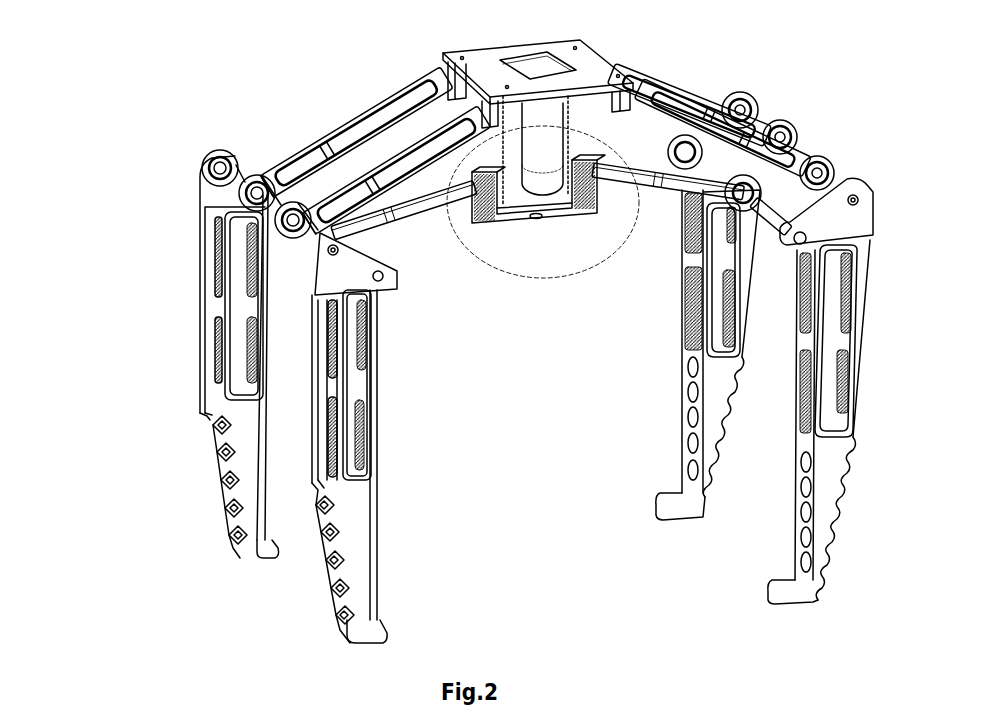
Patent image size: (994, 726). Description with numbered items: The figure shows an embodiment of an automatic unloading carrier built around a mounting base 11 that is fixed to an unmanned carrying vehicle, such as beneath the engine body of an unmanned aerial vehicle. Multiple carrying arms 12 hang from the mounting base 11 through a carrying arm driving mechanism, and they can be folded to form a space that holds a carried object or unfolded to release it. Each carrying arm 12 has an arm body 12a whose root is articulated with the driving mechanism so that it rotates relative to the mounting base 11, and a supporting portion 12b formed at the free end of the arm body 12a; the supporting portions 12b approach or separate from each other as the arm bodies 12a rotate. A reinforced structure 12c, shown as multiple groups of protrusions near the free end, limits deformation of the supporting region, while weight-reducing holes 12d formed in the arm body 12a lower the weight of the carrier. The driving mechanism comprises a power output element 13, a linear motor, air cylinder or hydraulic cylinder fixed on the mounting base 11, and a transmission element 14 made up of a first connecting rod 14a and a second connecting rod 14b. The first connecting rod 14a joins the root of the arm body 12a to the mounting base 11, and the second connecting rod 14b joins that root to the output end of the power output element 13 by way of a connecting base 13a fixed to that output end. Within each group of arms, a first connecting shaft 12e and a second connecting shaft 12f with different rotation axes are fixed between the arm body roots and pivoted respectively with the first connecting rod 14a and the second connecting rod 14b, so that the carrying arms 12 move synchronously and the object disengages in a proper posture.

The mounting base 11 is at (585, 66).
The carrying arm 12 is at (231, 388).
The arm body 12a is at (317, 430).
The supporting portion 12b is at (773, 590).
The reinforced structure 12c is at (327, 562).
The weight-reducing holes 12d is at (683, 443).
The first connecting shaft 12e is at (200, 171).
The second connecting shaft 12f is at (762, 208).
The power output element 13 is at (553, 128).
The connecting base 13a is at (523, 222).
The transmission element 14 is at (514, 199).
The first connecting rod 14a is at (440, 124).
The second connecting rod 14b is at (647, 190).